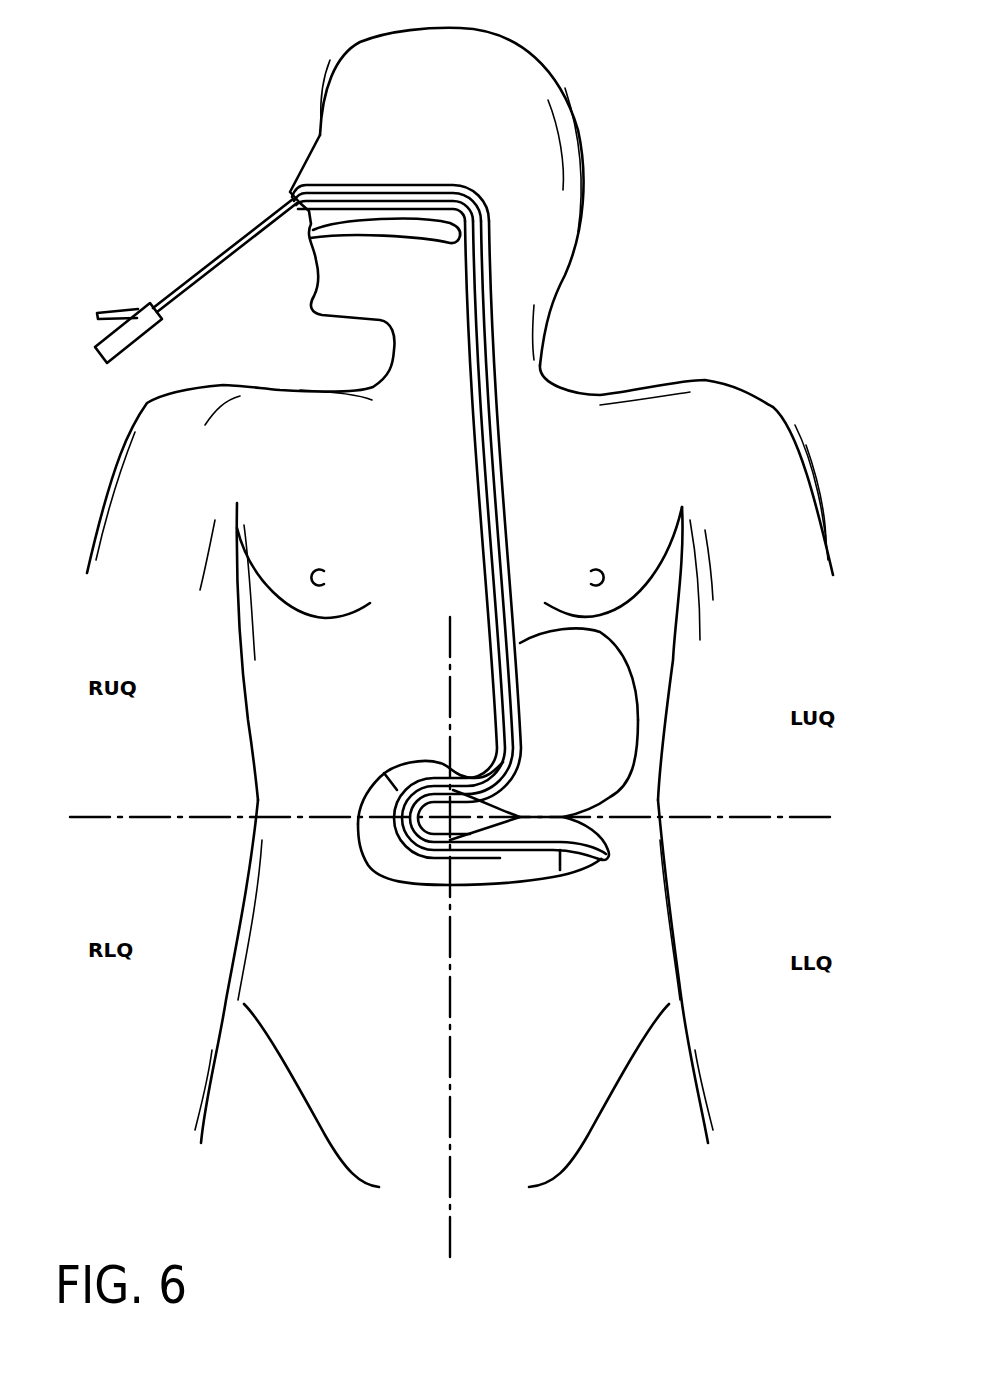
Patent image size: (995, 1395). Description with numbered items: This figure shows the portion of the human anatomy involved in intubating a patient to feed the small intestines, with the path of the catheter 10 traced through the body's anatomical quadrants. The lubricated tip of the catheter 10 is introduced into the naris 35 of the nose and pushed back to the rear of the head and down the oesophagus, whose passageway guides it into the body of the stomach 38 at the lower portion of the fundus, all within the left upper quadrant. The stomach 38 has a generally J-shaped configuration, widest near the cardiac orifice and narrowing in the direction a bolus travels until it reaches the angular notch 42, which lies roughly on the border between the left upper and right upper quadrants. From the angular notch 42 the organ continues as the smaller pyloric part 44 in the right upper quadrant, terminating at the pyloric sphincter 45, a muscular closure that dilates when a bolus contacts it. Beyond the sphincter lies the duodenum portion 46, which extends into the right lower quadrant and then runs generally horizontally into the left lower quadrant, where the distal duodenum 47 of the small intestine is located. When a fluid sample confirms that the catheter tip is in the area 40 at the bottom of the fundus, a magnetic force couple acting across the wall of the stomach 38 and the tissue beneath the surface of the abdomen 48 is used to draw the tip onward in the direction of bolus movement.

The catheter 10 is at (128, 301).
The naris 35 is at (291, 197).
The stomach 38 is at (612, 750).
The area at the bottom of the fundus 40 is at (611, 682).
The angular notch 42 is at (486, 775).
The pyloric part 44 is at (390, 767).
The pyloric sphincter 45 is at (376, 785).
The duodenum portion 46 is at (369, 861).
The distal duodenum 47 is at (542, 866).
The abdomen 48 is at (366, 673).